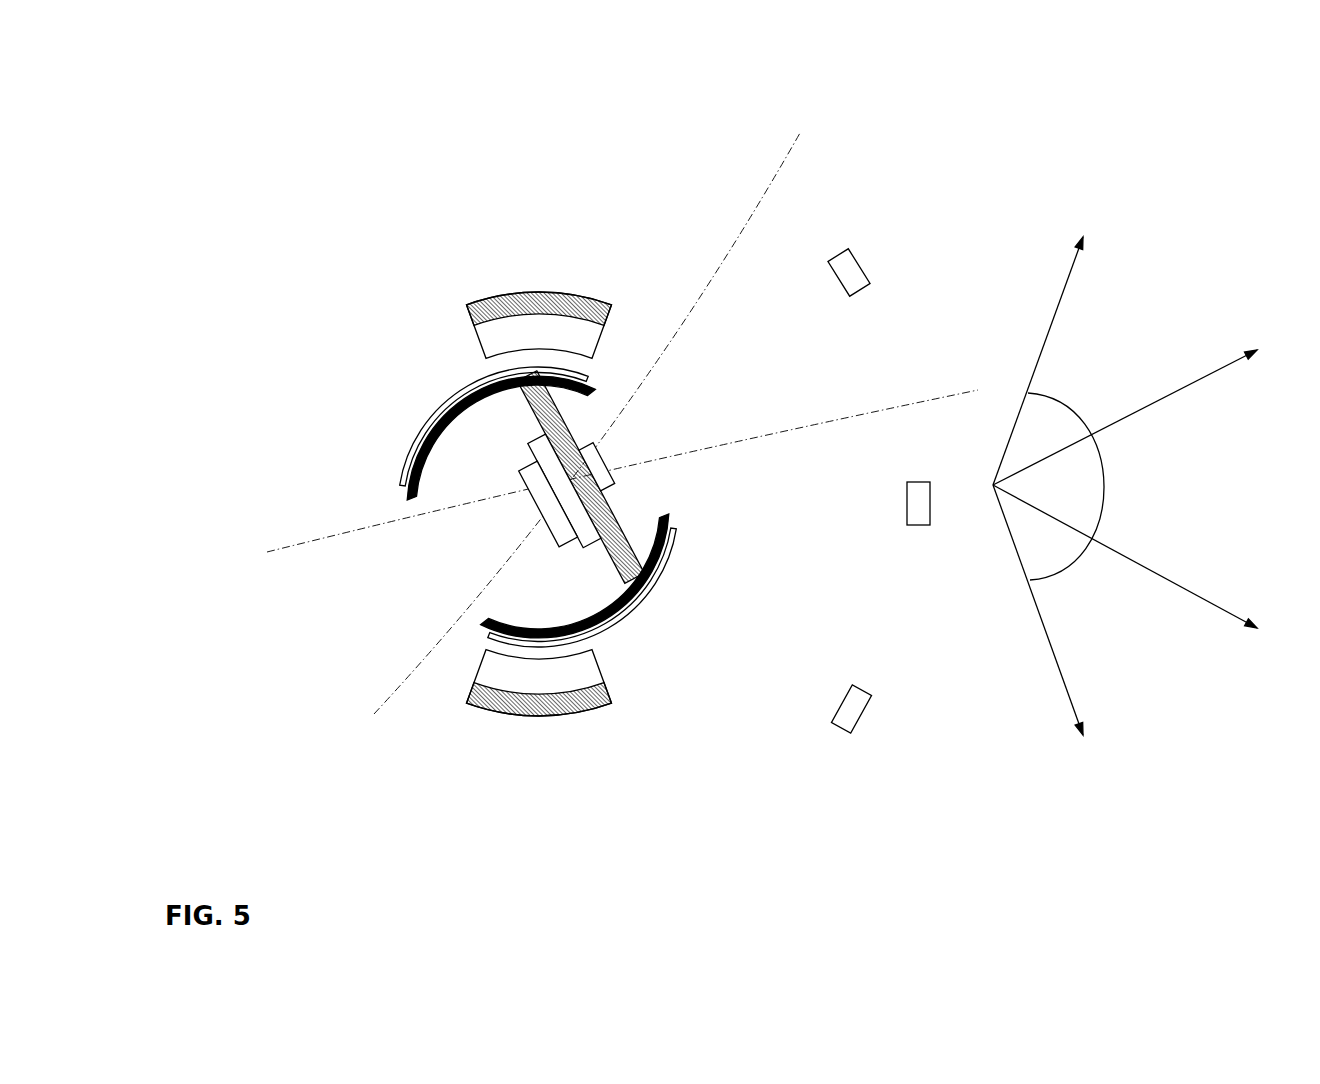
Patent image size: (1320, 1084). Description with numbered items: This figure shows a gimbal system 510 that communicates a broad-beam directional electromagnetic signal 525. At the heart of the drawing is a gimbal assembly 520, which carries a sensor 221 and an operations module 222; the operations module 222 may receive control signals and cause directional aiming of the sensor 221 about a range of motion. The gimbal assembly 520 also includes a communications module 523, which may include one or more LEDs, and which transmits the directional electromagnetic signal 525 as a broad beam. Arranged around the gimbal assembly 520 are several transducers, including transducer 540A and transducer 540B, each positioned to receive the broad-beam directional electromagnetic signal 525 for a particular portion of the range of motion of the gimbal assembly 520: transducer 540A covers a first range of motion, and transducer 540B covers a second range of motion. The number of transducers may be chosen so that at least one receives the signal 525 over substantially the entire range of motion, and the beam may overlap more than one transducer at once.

The gimbal system 510 is at (938, 152).
The gimbal assembly 520 is at (512, 567).
The sensor 221 is at (520, 471).
The operations module 222 is at (571, 543).
The communications module 523 is at (613, 490).
The broad-beam directional electromagnetic signal 525 is at (812, 426).
The transducer 540A is at (862, 288).
The transducer 540B is at (918, 525).